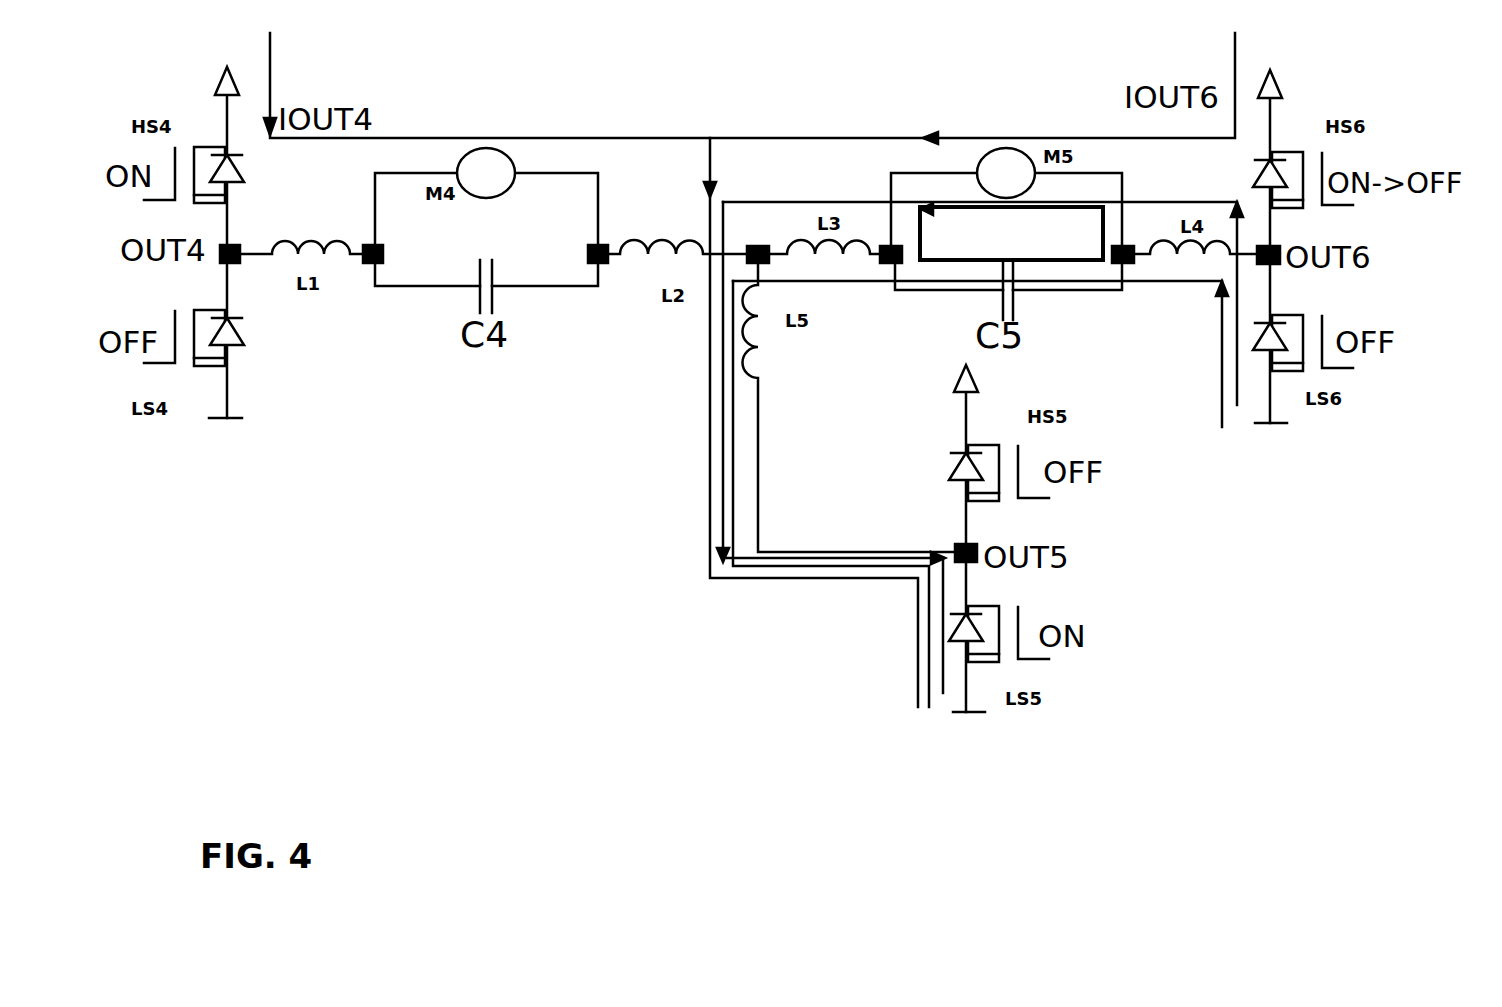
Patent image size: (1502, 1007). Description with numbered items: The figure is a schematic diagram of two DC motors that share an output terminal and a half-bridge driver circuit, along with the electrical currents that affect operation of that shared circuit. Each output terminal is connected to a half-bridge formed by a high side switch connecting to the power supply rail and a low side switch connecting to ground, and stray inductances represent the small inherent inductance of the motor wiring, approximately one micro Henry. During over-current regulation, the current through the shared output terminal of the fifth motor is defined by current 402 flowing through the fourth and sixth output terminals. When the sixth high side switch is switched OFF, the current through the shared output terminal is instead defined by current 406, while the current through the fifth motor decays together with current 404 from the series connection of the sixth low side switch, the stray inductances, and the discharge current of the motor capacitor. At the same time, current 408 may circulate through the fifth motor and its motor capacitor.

The current 402 is at (636, 124).
The current 404 is at (1205, 310).
The current 406 is at (798, 195).
The current 408 is at (1107, 230).